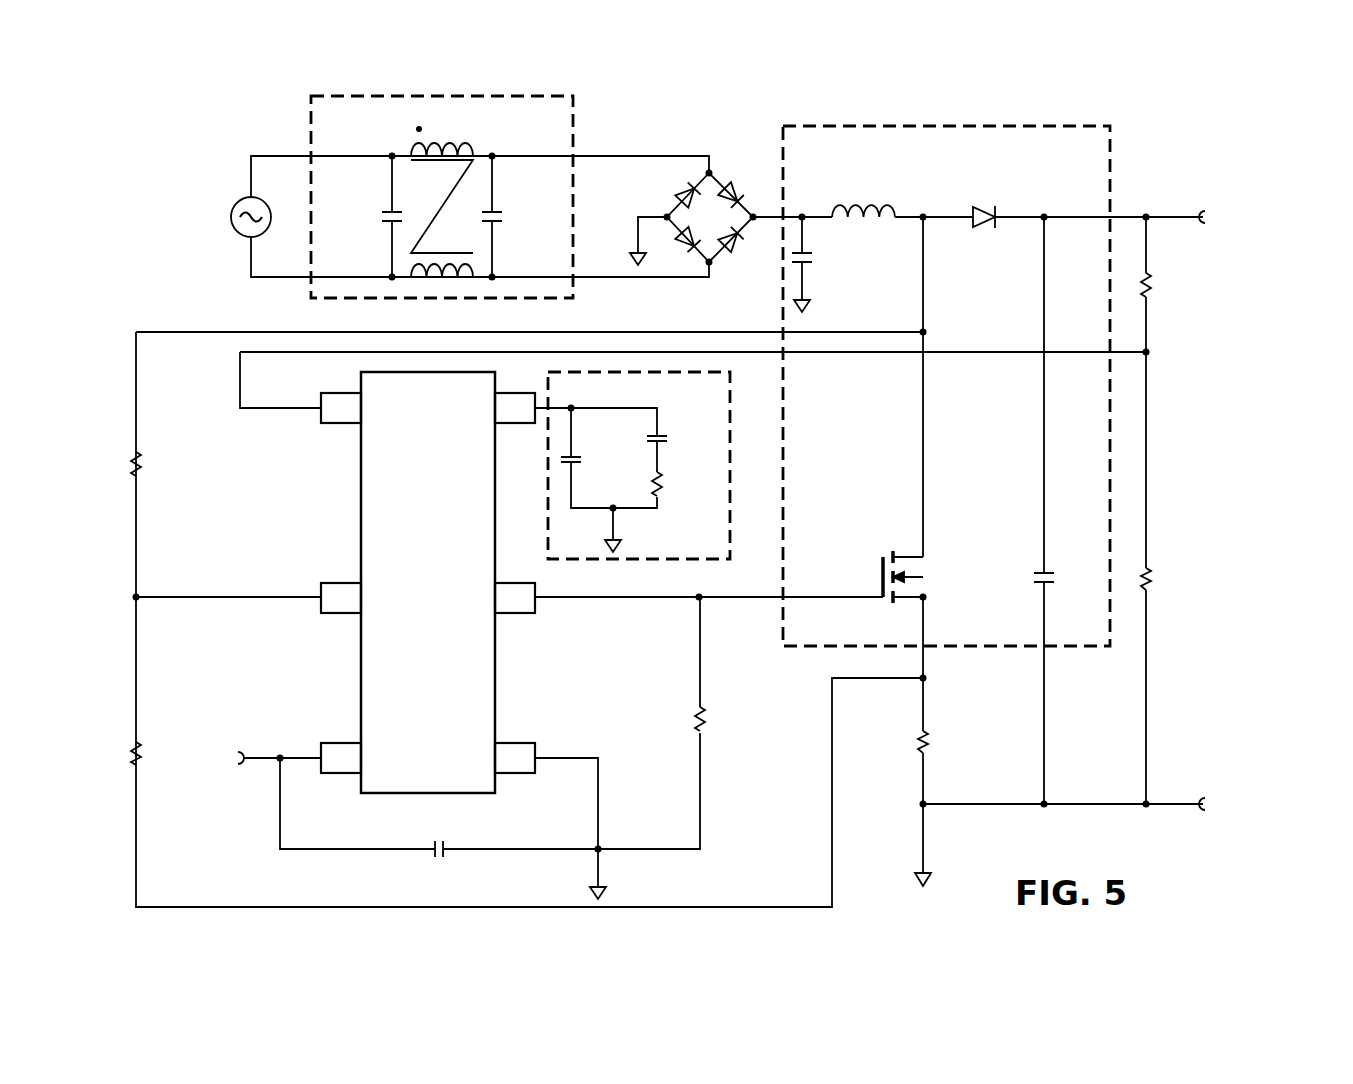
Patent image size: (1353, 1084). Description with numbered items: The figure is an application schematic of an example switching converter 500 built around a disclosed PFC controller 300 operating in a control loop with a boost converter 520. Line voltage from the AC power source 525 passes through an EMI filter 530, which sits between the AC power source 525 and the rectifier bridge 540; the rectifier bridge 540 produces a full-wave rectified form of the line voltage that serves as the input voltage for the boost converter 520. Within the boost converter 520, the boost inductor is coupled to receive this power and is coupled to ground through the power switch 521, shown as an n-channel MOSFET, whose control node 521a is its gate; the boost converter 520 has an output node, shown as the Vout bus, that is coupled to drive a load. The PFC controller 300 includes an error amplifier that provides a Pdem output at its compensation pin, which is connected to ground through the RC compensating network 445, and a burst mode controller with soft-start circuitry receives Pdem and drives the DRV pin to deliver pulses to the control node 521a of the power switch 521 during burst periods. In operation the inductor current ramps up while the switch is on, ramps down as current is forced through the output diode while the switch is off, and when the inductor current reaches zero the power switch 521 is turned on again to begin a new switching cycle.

The switching converter 500 is at (127, 143).
The AC power source 525 is at (236, 201).
The EMI filter 530 is at (306, 124).
The rectifier bridge 540 is at (729, 165).
The boost converter 520 is at (1117, 177).
The power switch 521 is at (886, 542).
The control node 521a is at (879, 568).
The PFC controller 300 is at (449, 599).
The RC compensating network 445 is at (690, 549).